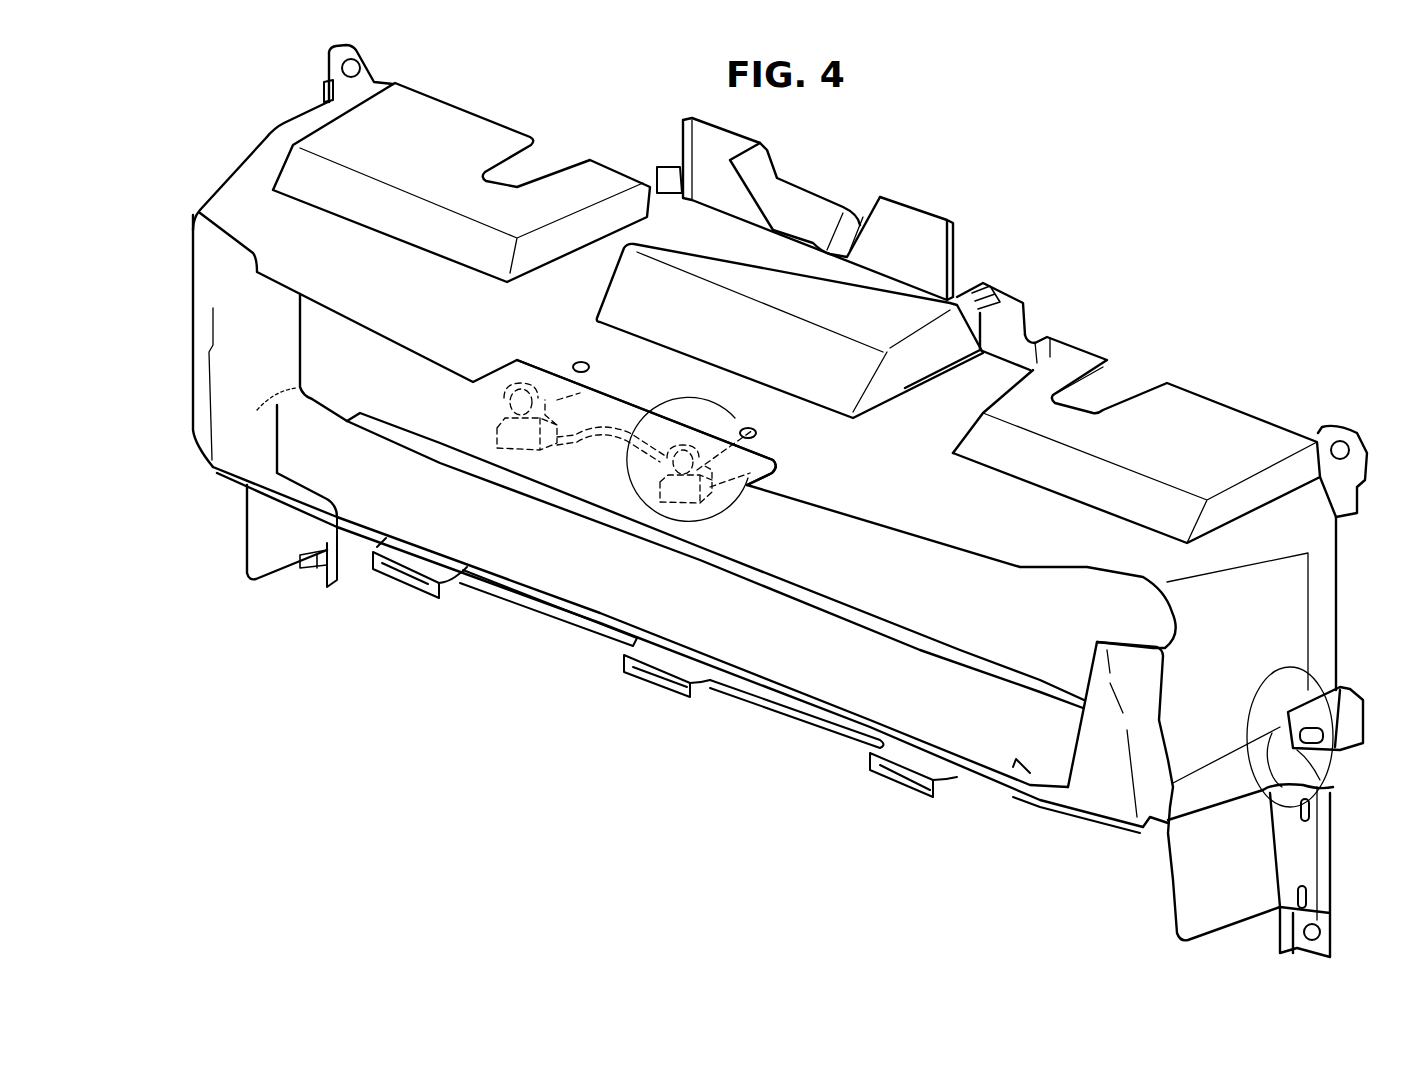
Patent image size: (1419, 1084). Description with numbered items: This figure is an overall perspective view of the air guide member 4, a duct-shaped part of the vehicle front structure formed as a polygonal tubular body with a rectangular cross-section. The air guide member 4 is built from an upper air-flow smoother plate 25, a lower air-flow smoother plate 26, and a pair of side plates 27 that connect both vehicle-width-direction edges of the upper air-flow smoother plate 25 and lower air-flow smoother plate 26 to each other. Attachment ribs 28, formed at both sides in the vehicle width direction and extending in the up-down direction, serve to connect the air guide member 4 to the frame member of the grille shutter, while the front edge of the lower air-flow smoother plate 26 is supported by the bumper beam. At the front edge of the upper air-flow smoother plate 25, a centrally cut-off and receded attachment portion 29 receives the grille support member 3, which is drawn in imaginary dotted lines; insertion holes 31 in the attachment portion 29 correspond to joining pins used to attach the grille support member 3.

The air guide member 4 is at (976, 190).
The upper air-flow smoother plate 25 is at (1073, 530).
The lower air-flow smoother plate 26 is at (811, 660).
The side plates 27 is at (222, 250).
The attachment ribs 28 is at (1303, 813).
The attachment portion 29 is at (700, 523).
The insertion holes 31 is at (748, 428).
The grille support member 3 is at (573, 420).